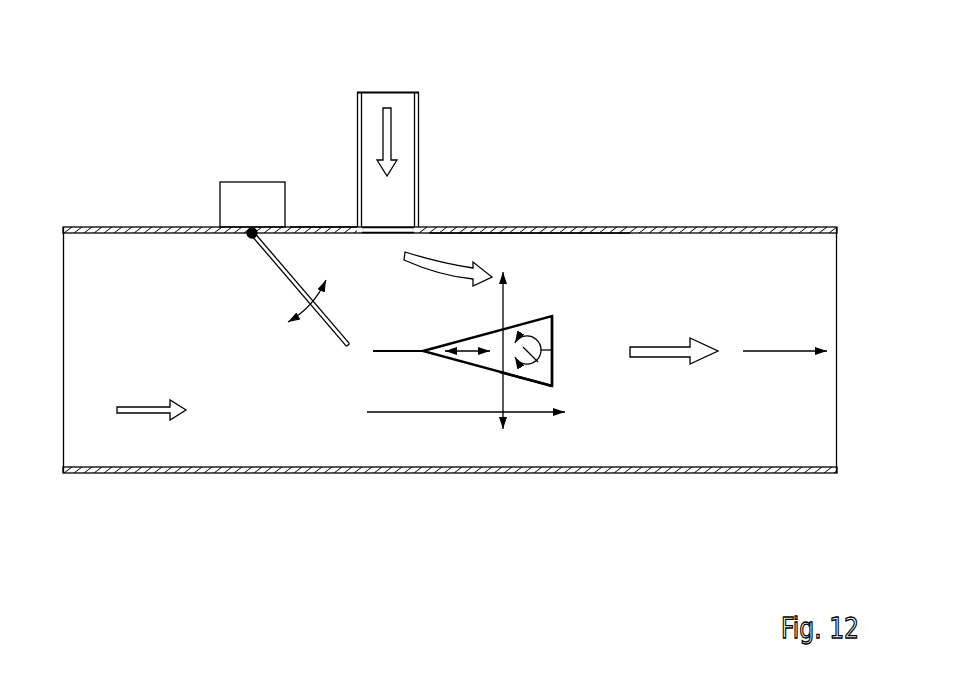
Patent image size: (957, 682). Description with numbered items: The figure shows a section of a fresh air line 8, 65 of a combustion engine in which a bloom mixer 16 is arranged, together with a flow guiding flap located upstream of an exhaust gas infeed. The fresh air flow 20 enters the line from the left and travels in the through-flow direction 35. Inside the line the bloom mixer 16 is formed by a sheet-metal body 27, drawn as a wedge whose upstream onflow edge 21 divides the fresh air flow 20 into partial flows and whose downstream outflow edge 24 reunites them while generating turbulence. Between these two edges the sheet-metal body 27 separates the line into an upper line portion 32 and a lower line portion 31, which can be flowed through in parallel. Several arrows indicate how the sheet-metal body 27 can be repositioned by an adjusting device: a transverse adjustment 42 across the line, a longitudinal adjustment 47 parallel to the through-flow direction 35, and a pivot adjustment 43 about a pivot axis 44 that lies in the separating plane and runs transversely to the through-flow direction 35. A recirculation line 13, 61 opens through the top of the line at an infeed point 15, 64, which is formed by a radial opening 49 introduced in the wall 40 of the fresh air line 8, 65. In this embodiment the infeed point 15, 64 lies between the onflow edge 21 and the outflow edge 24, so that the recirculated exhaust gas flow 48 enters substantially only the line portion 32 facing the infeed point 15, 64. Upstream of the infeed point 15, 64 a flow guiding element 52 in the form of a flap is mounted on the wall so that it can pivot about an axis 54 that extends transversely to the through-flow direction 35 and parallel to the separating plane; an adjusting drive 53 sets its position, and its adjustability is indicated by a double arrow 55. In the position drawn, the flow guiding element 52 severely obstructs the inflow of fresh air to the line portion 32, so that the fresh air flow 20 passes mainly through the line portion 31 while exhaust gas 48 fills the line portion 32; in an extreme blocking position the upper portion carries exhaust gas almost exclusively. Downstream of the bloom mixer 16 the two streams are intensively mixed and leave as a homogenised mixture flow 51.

The fresh air line 8 is at (450, 173).
The fresh air line 65 is at (663, 224).
The recirculation line 13 is at (452, 139).
The recirculation line 61 is at (421, 113).
The infeed point 15 is at (306, 185).
The infeed point 64 is at (357, 227).
The bloom mixer 16 is at (561, 423).
The sheet-metal body 27 is at (560, 387).
The fresh air flow 20 is at (142, 405).
The onflow edge 21 is at (373, 350).
The outflow edge 24 is at (553, 330).
The line portion 31 is at (528, 448).
The line portion 32 is at (520, 263).
The through-flow direction 35 is at (780, 350).
The wall 40 is at (735, 227).
The transverse adjustment 42 is at (506, 292).
The pivot adjustment 43 is at (552, 350).
The pivot axis 44 is at (556, 361).
The longitudinal adjustment 47 is at (470, 355).
The recirculated exhaust gas flow 48 is at (386, 106).
The radial opening 49 is at (383, 234).
The mixture flow 51 is at (650, 347).
The flow guiding element 52 is at (278, 268).
The adjusting drive 53 is at (252, 204).
The axis 54 is at (250, 236).
The double arrow 55 is at (305, 317).